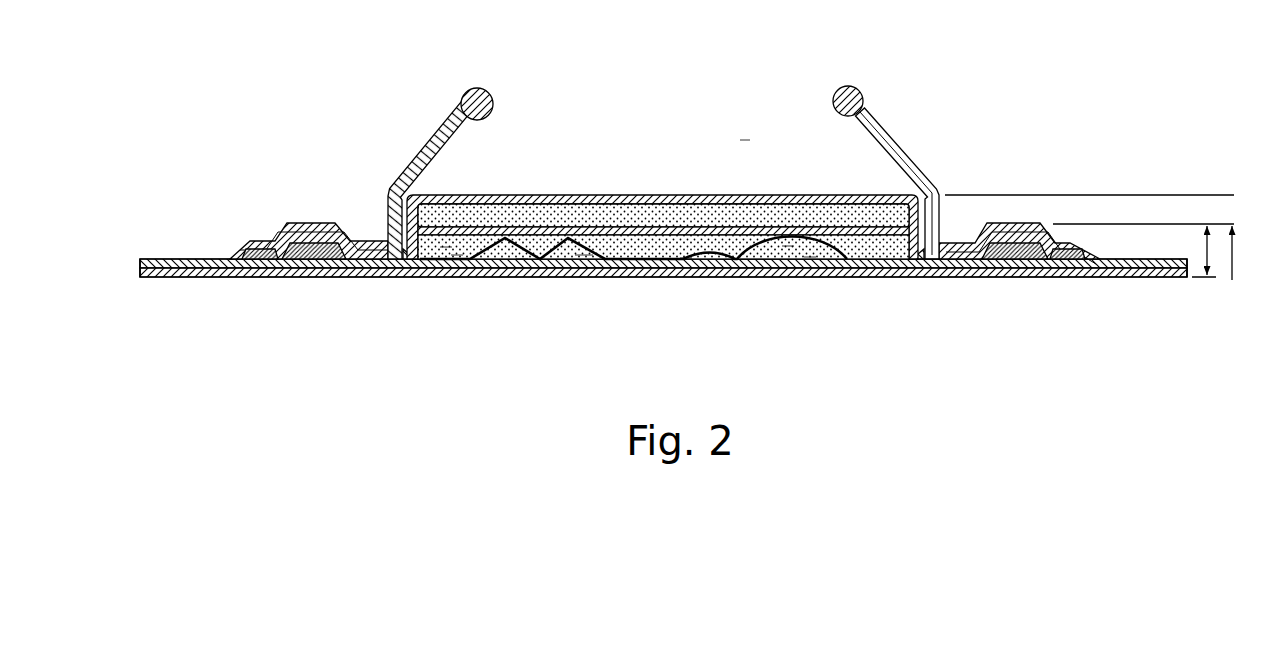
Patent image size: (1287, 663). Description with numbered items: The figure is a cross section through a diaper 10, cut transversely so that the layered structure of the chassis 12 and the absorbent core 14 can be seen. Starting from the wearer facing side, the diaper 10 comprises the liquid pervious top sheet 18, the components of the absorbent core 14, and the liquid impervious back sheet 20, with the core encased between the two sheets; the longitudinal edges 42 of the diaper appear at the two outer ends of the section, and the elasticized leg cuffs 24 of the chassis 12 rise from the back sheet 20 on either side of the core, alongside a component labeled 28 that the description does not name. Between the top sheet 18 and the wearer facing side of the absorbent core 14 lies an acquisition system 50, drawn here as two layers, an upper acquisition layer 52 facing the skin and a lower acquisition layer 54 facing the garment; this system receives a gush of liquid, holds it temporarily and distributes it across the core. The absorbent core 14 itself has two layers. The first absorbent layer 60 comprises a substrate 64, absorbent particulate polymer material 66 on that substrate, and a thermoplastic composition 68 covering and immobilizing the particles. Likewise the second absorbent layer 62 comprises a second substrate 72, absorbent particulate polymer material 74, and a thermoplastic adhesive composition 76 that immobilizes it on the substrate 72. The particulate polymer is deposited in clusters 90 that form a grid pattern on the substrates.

The diaper 10 is at (745, 135).
The chassis 12 is at (925, 279).
The absorbent core 14 is at (856, 271).
The top sheet 18 is at (600, 198).
The back sheet 20 is at (632, 263).
The elasticized leg cuffs 24 is at (397, 157).
The clip anchor 28 is at (296, 263).
The longitudinal edges 42 is at (140, 280).
The acquisition system 50 is at (686, 195).
The upper acquisition layer 52 is at (521, 218).
The lower acquisition layer 54 is at (772, 213).
The first absorbent layer 60 is at (584, 252).
The second absorbent layer 62 is at (544, 250).
The substrate 64 is at (686, 259).
The absorbent particulate polymer material 66 is at (810, 257).
The thermoplastic composition 68 is at (788, 247).
The substrate 72 is at (522, 259).
The absorbent particulate polymer material 74 is at (647, 243).
The thermoplastic adhesive composition 76 is at (457, 255).
The clusters 90 is at (500, 242).